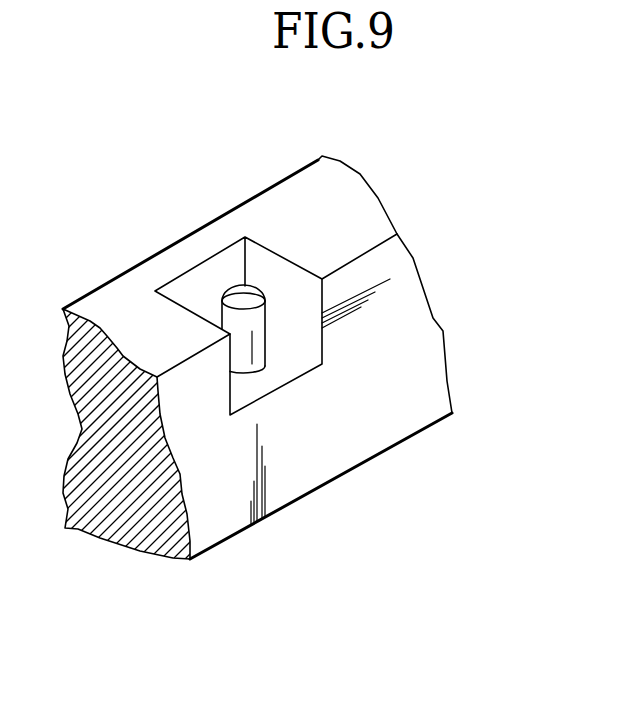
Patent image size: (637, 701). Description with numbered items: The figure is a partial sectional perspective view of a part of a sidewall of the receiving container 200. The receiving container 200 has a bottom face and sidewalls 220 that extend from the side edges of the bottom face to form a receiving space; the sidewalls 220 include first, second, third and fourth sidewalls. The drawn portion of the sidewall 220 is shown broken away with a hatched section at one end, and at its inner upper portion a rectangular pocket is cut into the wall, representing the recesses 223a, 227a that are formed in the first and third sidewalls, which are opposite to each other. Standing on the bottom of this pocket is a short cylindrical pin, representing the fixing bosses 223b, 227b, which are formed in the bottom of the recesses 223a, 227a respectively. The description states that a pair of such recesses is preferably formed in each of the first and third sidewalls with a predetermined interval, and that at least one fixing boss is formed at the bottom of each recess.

The receiving container 200 is at (405, 197).
The sidewall 220 is at (294, 212).
The recess 223a is at (240, 287).
The recess 227a is at (231, 266).
The fixing boss 223b is at (136, 290).
The fixing boss 227b is at (229, 287).